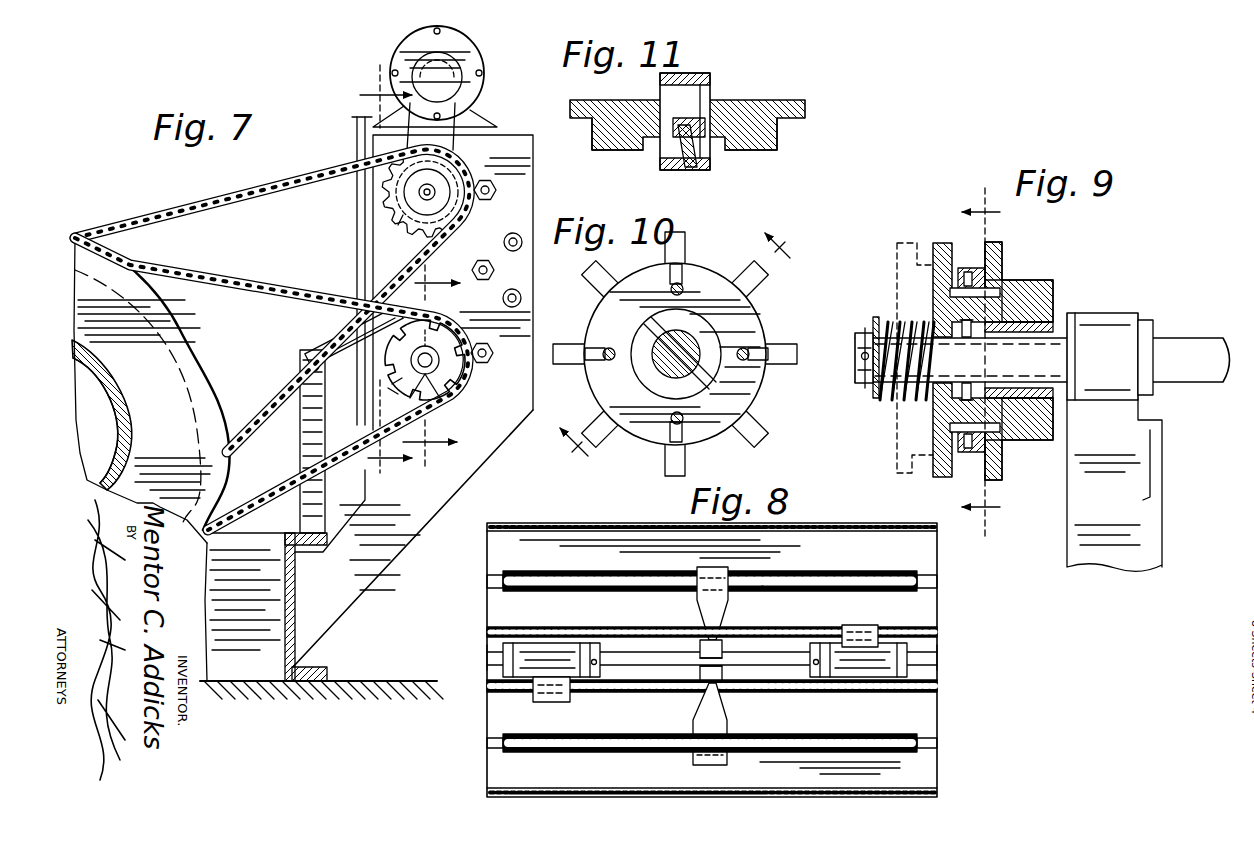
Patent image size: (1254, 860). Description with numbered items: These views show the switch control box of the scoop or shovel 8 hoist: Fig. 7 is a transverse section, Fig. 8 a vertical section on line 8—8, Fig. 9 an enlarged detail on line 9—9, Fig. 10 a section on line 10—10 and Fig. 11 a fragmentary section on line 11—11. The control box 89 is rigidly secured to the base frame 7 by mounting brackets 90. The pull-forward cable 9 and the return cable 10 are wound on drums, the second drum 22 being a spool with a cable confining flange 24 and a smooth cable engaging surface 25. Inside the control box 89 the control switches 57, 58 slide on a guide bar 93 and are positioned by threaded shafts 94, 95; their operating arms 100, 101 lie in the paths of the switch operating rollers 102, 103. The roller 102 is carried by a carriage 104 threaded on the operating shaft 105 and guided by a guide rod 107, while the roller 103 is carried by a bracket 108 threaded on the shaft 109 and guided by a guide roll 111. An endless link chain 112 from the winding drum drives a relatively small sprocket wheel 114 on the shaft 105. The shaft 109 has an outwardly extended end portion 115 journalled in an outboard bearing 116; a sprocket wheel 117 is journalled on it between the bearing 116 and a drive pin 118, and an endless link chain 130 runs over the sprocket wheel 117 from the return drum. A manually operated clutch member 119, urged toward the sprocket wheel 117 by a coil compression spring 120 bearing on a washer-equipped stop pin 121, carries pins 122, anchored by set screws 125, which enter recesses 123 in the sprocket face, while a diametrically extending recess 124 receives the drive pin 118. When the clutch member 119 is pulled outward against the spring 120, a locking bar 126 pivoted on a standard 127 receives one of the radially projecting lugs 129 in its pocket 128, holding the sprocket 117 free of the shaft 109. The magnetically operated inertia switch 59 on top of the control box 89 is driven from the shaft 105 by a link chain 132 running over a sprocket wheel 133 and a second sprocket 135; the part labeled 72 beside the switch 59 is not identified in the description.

In FIG. 7, the base frame 7 is at (295, 625).
In FIG. 7, the scoop or shovel 8 is at (371, 282).
In FIG. 7, the pull-forward cable 9 is at (435, 367).
In FIG. 9, the pull-back or return cable 10 is at (999, 364).
In FIG. 10, the section line 11- 11 is at (692, 358).
In FIG. 7, the second drum 22 is at (128, 397).
In FIG. 7, the cable confining flange 24 is at (208, 373).
In FIG. 7, the cable engaging surface 25 is at (110, 375).
In FIG. 8, the control switch 57 is at (568, 647).
In FIG. 8, the control switch 58 is at (838, 680).
In FIG. 7, the magnetically operated inertia switch 59 is at (480, 45).
In FIG. 7, the motor shaft 72 is at (470, 67).
In FIG. 7, the control box 89 is at (535, 188).
In FIG. 8, the control box 89 is at (628, 523).
In FIG. 7, the mounting bracket 90 is at (392, 545).
In FIG. 7, the guide bar 93 is at (496, 272).
In FIG. 8, the guide bar 93 is at (624, 657).
In FIG. 7, the threaded shaft 94 is at (523, 299).
In FIG. 8, the threaded shaft 94 is at (612, 700).
In FIG. 7, the threaded shaft 95 is at (505, 243).
In FIG. 8, the threaded shaft 95 is at (818, 630).
In FIG. 8, the operating arm 100 is at (503, 655).
In FIG. 8, the operating arm 101 is at (882, 662).
In FIG. 8, the switch operating roller 102 is at (730, 640).
In FIG. 8, the switch operating roller 103 is at (703, 682).
In FIG. 8, the carriage 104 is at (700, 620).
In FIG. 7, the threaded operating shaft 105 is at (404, 192).
In FIG. 8, the threaded operating shaft 105 is at (810, 574).
In FIG. 7, the guide rod 107 is at (497, 196).
In FIG. 8, the bracket 108 is at (728, 713).
In FIG. 7, the threaded shaft 109 is at (440, 366).
In FIG. 8, the threaded shaft 109 is at (602, 750).
In FIG. 7, the guide roll 111 is at (497, 355).
In FIG. 7, the endless link chain 112 is at (288, 180).
In FIG. 7, the relatively small sprocket wheel 114 is at (400, 210).
In FIG. 7, the outwardly extended end portion 115 is at (433, 370).
In FIG. 11, the outwardly extended end portion 115 is at (712, 83).
In FIG. 10, the outwardly extended end portion 115 is at (656, 370).
In FIG. 9, the outwardly extended end portion 115 is at (1180, 345).
In FIG. 9, the outboard bearing 116 is at (1108, 345).
In FIG. 7, the sprocket wheel 117 is at (387, 382).
In FIG. 9, the sprocket wheel 117 is at (1003, 263).
In FIG. 11, the drive pin 118 is at (691, 166).
In FIG. 9, the drive pin 118 is at (956, 398).
In FIG. 7, the manually operated clutch member 119 is at (445, 400).
In FIG. 11, the manually operated clutch member 119 is at (772, 142).
In FIG. 10, the manually operated clutch member 119 is at (750, 318).
In FIG. 9, the manually operated clutch member 119 is at (895, 289).
In FIG. 9, the coil compression spring 120 is at (870, 390).
In FIG. 9, the washer-equipped stop pin 121 is at (858, 370).
In FIG. 10, the pin 122 is at (606, 360).
In FIG. 9, the pin 122 is at (975, 434).
In FIG. 9, the recess 123 is at (1053, 283).
In FIG. 11, the diametrically extending recess 124 is at (682, 143).
In FIG. 9, the diametrically extending recess 124 is at (935, 317).
In FIG. 10, the set screw 125 is at (762, 333).
In FIG. 9, the set screw 125 is at (960, 447).
In FIG. 7, the locking bar 126 is at (352, 337).
In FIG. 7, the standard 127 is at (303, 445).
In FIG. 7, the opening or pocket 128 is at (362, 302).
In FIG. 11, the lug 129 is at (582, 100).
In FIG. 10, the lug 129 is at (690, 238).
In FIG. 9, the lug 129 is at (940, 242).
In FIG. 7, the endless link chain 130 is at (263, 285).
In FIG. 7, the link chain 132 is at (458, 150).
In FIG. 7, the sprocket wheel 133 is at (398, 227).
In FIG. 7, the second sprocket 135 is at (470, 93).